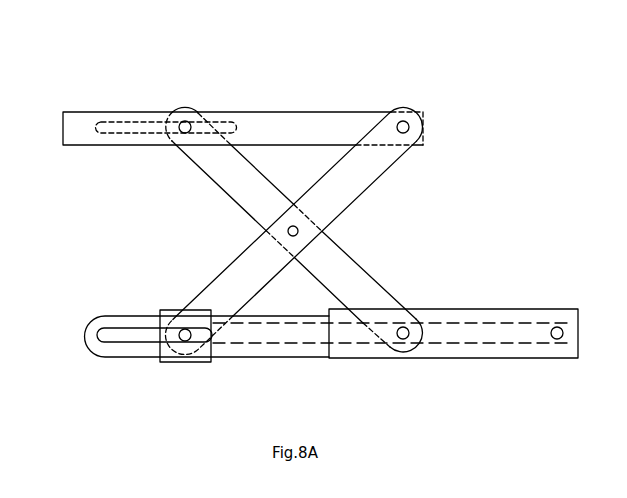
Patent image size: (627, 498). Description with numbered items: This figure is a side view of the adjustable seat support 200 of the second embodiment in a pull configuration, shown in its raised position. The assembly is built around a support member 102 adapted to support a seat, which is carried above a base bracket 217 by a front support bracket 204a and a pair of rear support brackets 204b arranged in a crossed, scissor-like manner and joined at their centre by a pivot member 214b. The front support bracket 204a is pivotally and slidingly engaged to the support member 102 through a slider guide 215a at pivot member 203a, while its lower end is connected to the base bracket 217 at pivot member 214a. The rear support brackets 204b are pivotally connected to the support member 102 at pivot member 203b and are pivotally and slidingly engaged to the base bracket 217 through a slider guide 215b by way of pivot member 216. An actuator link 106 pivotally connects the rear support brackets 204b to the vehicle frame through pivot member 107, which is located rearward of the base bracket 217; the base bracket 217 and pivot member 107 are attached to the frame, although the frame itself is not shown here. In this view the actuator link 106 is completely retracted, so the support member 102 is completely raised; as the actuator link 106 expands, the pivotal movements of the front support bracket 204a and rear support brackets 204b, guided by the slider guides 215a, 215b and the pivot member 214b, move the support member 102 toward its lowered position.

The adjustable seat support 200 is at (470, 108).
The support member 102 is at (309, 112).
The actuator link 106 is at (527, 308).
The pivot member 107 is at (557, 341).
The pivot member 203a is at (183, 121).
The pivot member 203b is at (406, 121).
The front support bracket 204a is at (213, 183).
The rear support brackets 204b is at (363, 180).
The pivot member 214a is at (404, 341).
The pivot member 214b is at (288, 232).
The slider guide 215a is at (135, 120).
The slider guide 215b is at (147, 343).
The pivot member 216 is at (186, 342).
The base bracket 217 is at (241, 357).